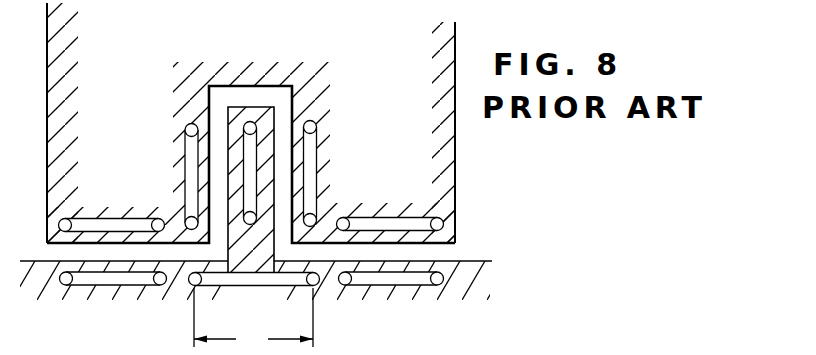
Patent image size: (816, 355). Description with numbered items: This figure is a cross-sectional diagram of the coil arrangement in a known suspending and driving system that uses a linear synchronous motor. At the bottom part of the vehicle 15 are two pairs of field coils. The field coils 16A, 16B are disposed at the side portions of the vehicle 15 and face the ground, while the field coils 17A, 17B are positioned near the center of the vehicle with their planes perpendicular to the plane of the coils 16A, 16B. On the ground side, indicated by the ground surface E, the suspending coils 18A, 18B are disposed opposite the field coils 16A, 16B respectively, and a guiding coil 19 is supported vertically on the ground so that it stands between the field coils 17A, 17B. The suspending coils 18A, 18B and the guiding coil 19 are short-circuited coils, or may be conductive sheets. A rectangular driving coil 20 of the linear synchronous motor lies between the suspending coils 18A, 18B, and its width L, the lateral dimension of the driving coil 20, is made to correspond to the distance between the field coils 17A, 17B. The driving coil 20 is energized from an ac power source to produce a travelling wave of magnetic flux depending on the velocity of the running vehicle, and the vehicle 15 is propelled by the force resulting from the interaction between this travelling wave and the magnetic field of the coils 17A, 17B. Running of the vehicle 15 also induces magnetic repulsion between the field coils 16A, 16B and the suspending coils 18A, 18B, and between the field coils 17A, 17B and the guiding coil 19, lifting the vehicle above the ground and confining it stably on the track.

The vehicle 15 is at (254, 55).
The field coil 16A is at (122, 218).
The field coil 16B is at (392, 217).
The field coil 17A is at (185, 162).
The field coil 17B is at (345, 157).
The suspending coil 18A is at (116, 286).
The suspending coil 18B is at (400, 286).
The guiding coil 19 is at (255, 131).
The driving coil 20 is at (255, 286).
The base surface E is at (477, 261).
The width of driving coil L is at (253, 320).